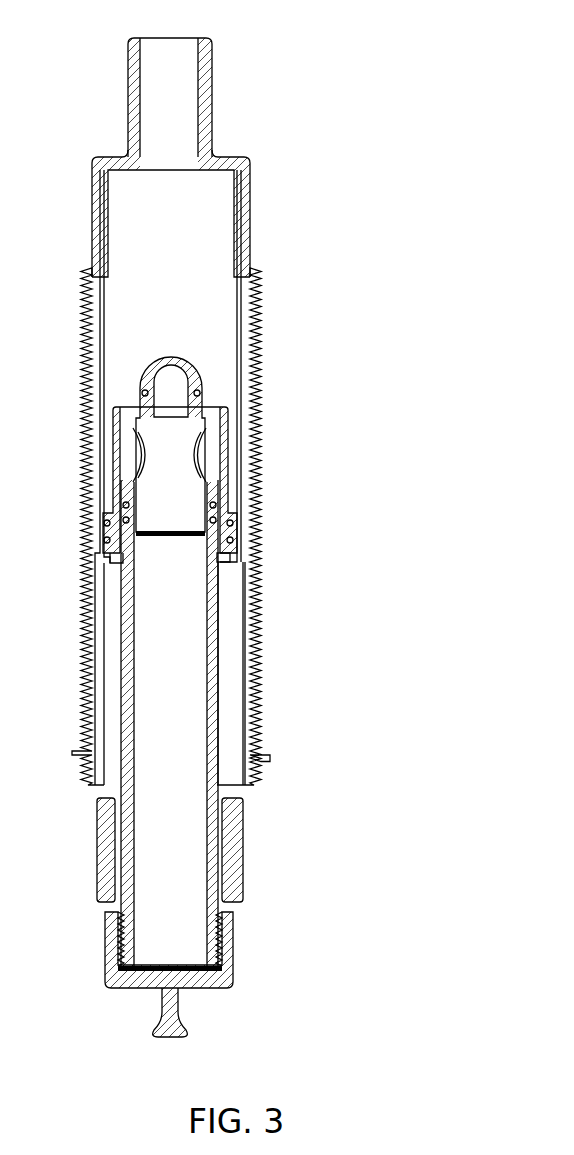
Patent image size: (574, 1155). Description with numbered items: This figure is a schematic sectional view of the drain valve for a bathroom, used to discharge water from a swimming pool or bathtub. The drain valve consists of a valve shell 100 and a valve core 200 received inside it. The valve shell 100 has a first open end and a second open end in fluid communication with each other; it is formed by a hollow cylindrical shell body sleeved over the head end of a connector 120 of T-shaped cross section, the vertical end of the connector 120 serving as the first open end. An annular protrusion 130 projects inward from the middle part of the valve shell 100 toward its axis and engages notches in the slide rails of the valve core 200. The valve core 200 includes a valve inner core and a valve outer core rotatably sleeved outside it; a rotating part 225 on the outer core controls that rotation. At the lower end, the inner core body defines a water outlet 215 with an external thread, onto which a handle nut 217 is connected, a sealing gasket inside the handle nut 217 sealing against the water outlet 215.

The connector 120 is at (212, 120).
The valve shell 100 is at (250, 423).
The valve core 200 is at (172, 504).
The annular protrusion 130 is at (235, 555).
The rotating part 225 is at (227, 848).
The water outlet 215 is at (177, 968).
The handle nut 217 is at (177, 1022).